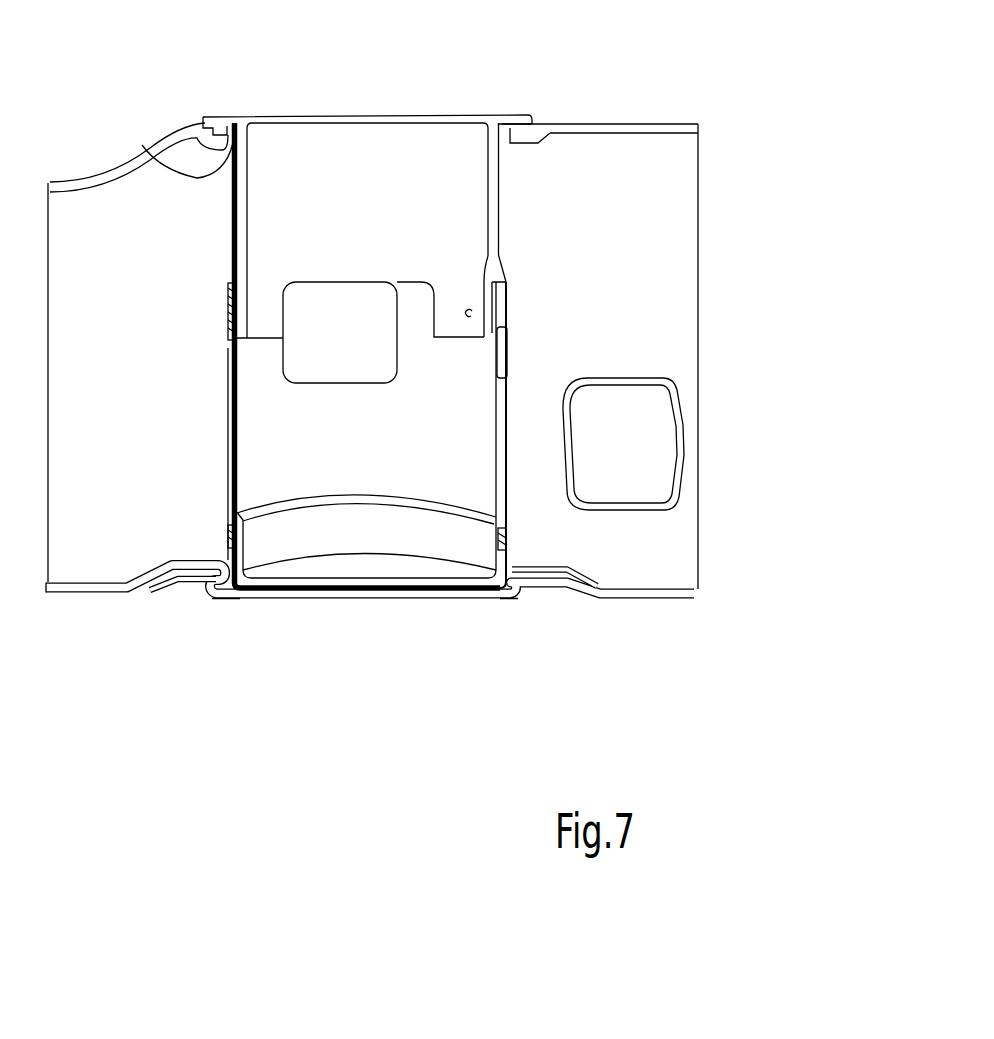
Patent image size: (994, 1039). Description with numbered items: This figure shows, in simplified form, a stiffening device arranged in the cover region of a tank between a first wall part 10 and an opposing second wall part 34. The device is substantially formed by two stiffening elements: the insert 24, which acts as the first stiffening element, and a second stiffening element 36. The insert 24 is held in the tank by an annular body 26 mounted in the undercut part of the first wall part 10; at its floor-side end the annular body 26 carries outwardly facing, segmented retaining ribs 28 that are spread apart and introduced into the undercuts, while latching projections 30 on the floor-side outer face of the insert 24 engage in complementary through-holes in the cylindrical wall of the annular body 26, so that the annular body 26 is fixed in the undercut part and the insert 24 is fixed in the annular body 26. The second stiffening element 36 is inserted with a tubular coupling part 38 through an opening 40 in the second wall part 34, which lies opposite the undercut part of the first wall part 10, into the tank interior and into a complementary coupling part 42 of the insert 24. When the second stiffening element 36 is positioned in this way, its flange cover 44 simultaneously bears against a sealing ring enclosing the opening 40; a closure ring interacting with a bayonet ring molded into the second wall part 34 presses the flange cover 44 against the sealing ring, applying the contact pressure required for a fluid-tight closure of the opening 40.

The first wall part 10 is at (629, 595).
The insert 24 is at (500, 373).
The annular body 26 is at (505, 532).
The retaining ribs 28 is at (233, 593).
The latching projections 30 is at (503, 547).
The second wall part 34 is at (637, 125).
The second stiffening element 36 is at (496, 194).
The tubular coupling part 38 is at (468, 318).
The opening 40 is at (142, 145).
The complementary coupling part 42 is at (220, 310).
The flange cover 44 is at (508, 114).